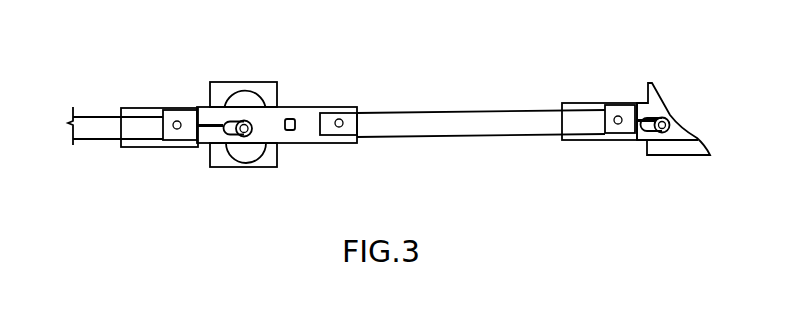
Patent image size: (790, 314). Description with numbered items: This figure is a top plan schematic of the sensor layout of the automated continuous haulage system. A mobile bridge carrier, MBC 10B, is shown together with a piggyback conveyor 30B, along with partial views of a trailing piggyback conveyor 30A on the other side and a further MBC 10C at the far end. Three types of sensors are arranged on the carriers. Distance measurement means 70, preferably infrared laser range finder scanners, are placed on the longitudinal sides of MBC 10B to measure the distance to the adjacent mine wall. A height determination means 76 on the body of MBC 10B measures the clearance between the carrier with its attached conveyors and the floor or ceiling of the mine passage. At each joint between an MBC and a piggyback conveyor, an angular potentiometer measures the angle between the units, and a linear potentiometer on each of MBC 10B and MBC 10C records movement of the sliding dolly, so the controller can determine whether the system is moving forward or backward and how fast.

The piggyback conveyor 30A is at (116, 120).
The piggyback conveyor 30B is at (546, 110).
The MBC 10B is at (319, 146).
The MBC 10C is at (592, 143).
The distance measurement means 70 is at (234, 81).
The height determination means 76 is at (291, 131).